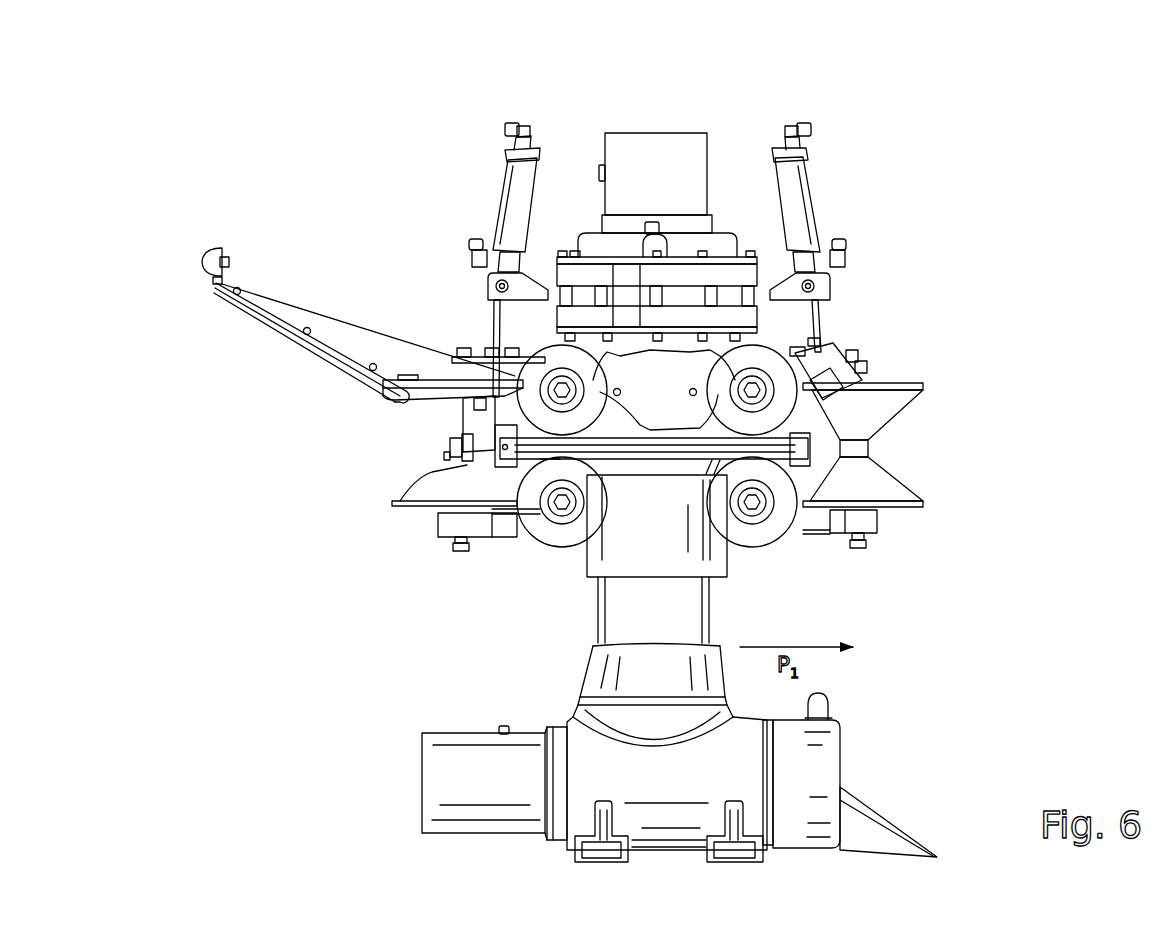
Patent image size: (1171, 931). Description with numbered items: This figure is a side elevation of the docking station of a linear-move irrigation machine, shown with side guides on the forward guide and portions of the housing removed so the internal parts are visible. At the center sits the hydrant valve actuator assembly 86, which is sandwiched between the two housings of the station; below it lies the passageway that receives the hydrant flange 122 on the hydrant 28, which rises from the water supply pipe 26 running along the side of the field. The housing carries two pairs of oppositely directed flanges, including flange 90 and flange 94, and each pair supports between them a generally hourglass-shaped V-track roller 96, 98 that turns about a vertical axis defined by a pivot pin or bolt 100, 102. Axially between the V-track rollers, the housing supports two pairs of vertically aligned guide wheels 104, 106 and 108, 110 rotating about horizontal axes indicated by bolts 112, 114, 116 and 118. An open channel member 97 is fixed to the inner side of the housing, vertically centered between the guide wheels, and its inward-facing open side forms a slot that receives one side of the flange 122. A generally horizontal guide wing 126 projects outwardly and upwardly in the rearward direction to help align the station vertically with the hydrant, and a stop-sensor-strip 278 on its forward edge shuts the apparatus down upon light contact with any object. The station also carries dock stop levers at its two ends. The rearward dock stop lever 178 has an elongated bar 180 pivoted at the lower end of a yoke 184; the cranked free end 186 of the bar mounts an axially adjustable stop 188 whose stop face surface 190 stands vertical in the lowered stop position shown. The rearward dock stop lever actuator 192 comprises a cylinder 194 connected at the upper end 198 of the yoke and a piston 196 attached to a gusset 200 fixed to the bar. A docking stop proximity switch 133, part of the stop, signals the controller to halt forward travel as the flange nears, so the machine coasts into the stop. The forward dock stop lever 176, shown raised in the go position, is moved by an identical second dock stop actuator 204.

The hydrant valve actuator assembly 86 is at (718, 180).
The rearward dock stop lever actuator 192 is at (468, 225).
The cylinder 194 is at (512, 208).
The yoke 184 is at (542, 293).
The upper end of the yoke 198 is at (470, 258).
The piston 196 is at (496, 330).
The second dock stop actuator 204 is at (838, 207).
The bolt 112 is at (558, 385).
The bolt 116 is at (765, 388).
The bolt 114 is at (557, 503).
The bolt 118 is at (750, 512).
The guide wheel 106 is at (570, 533).
The guide wheel 110 is at (772, 523).
The guide wheel 104 is at (593, 381).
The guide wheel 108 is at (703, 380).
The hydrant flange 122 is at (635, 445).
The stop face surface 190 is at (548, 457).
The hydrant 28 is at (667, 531).
The water supply pipe 26 is at (458, 775).
The V-track roller 96 is at (400, 487).
The free end of the bar 186 is at (430, 470).
The flange 90 is at (472, 522).
The pivot pin or bolt 100 is at (460, 552).
The flange 94 is at (840, 523).
The pivot pin or bolt 102 is at (858, 545).
The open channel member 97 is at (803, 420).
The V-track roller 98 is at (900, 467).
The forward dock stop lever 176 is at (837, 347).
The stop-sensor-strip 278 is at (208, 265).
The guide wing 126 is at (277, 308).
The elongated bar 180 is at (490, 420).
The rearward dock stop lever 178 is at (465, 422).
The gusset 200 is at (450, 440).
The docking stop proximity switch 133 is at (452, 447).
The axially adjustable stop 188 is at (448, 458).